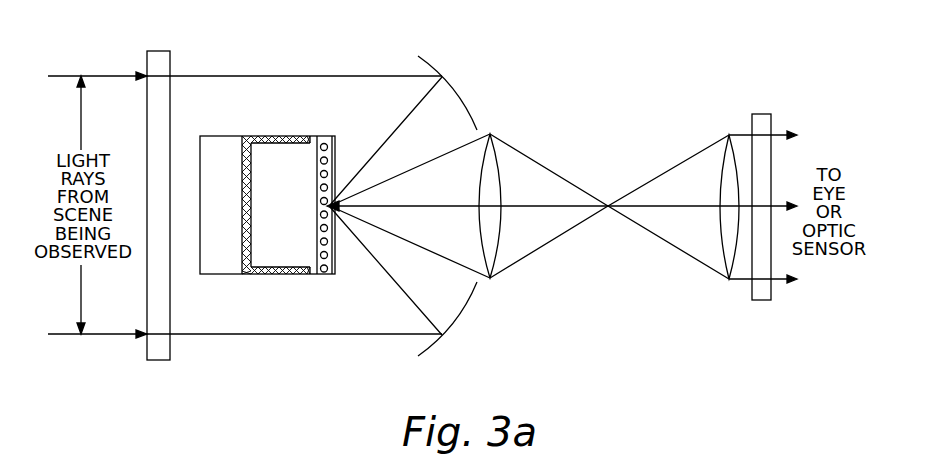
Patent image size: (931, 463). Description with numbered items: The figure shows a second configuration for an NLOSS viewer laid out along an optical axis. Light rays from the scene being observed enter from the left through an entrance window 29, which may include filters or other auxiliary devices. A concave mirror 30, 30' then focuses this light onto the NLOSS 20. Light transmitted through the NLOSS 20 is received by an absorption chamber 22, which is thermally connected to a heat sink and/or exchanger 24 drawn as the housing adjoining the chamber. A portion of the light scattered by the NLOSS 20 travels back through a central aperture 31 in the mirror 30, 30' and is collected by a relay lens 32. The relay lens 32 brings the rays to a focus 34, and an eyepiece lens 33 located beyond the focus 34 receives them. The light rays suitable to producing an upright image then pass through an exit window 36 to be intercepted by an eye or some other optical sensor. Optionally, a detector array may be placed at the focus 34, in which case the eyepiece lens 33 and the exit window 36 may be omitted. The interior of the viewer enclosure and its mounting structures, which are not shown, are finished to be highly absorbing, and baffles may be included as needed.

The NLOSS 20 is at (323, 136).
The absorption chamber 22 is at (290, 134).
The heat sink and/or exchanger 24 is at (209, 136).
The entrance window 29 is at (170, 58).
The concave mirror 30 is at (452, 82).
The concave mirror 30' is at (453, 333).
The central aperture 31 is at (482, 280).
The relay lens 32 is at (490, 134).
The eyepiece lens 33 is at (722, 150).
The focus 34 is at (608, 207).
The exit window 36 is at (761, 114).